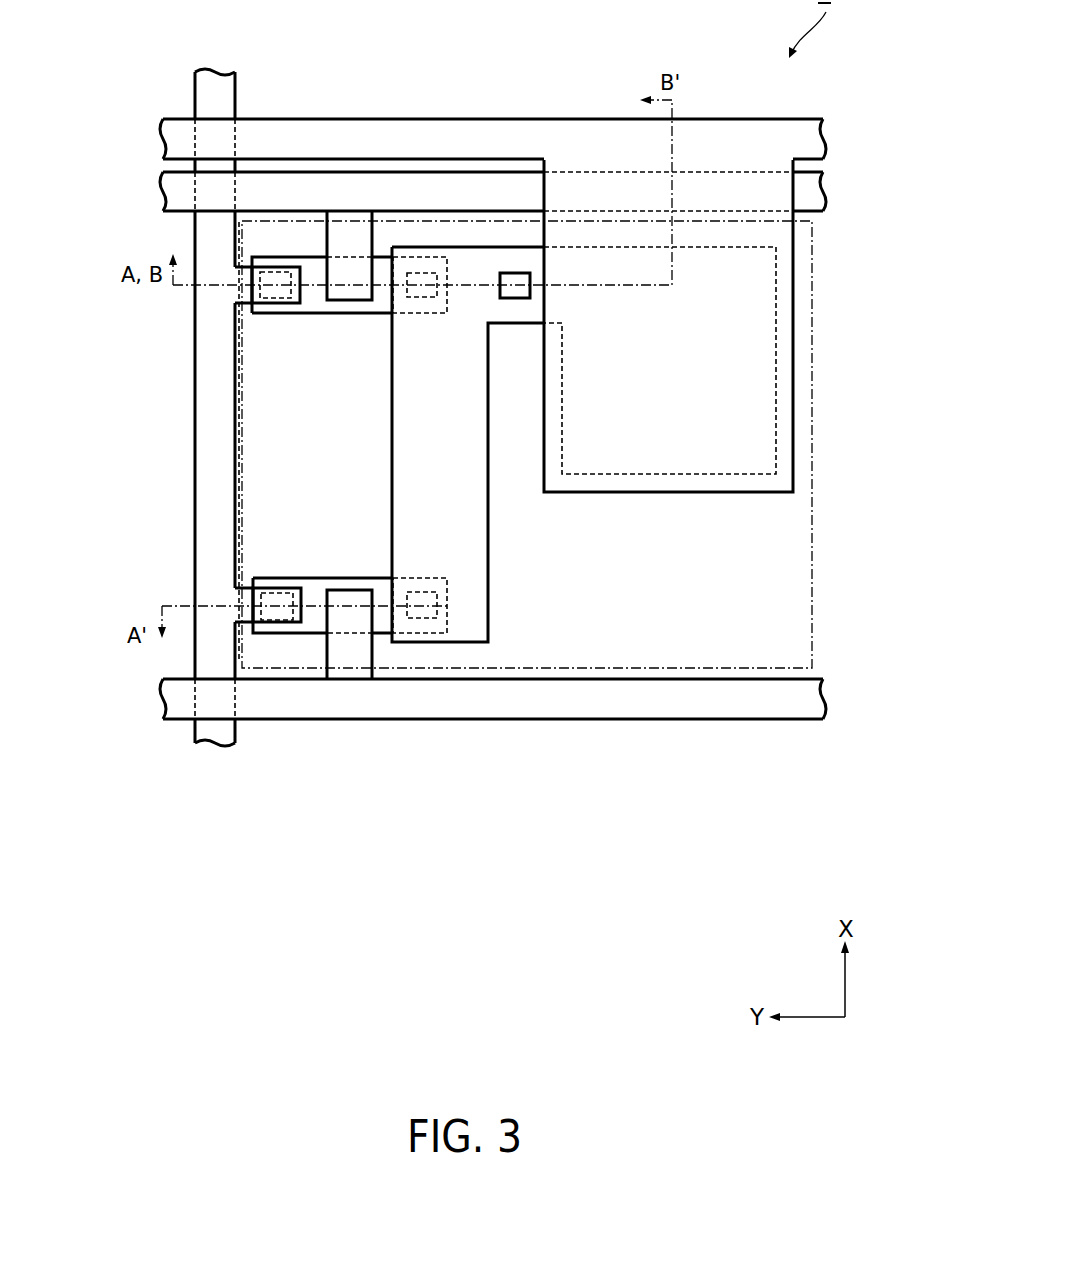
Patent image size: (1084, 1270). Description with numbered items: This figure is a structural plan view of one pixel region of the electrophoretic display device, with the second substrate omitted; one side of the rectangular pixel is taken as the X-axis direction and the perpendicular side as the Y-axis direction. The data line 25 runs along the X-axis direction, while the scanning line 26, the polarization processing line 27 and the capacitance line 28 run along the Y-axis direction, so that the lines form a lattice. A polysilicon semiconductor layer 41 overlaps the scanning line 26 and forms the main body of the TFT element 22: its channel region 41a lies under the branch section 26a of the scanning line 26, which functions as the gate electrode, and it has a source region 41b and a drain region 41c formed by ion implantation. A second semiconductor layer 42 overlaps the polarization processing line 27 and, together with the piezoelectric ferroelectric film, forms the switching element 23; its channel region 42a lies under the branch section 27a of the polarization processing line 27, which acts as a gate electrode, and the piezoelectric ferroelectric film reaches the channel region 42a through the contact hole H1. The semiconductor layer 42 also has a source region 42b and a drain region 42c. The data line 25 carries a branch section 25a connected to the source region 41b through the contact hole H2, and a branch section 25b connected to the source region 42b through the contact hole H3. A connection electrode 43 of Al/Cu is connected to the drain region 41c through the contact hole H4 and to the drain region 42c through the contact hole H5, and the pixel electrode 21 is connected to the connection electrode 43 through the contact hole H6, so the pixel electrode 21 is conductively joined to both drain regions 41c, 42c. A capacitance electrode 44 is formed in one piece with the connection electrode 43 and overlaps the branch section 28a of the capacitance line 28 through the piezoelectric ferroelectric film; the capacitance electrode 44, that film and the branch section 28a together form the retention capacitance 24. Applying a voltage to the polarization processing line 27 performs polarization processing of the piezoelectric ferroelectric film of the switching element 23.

The pixel electrode 21 is at (800, 283).
The TFT element 22 is at (216, 302).
The switching element 23 is at (219, 580).
The retention capacitance 24 is at (800, 435).
The data line 25 is at (208, 232).
The branch section 25a is at (257, 273).
The branch section 25b is at (258, 615).
The scanning line 26 is at (175, 193).
The branch section 26a is at (350, 278).
The polarization processing line 27 is at (178, 706).
The branch section 27a is at (366, 622).
The capacitance line 28 is at (175, 134).
The branch section 28a is at (783, 355).
The semiconductor layer 41 is at (127, 342).
The channel region 41a is at (343, 309).
The source region 41b is at (278, 309).
The drain region 41c is at (406, 298).
The semiconductor layer 42 is at (127, 466).
The channel region 42a is at (350, 582).
The source region 42b is at (283, 582).
The drain region 42c is at (408, 592).
The connection electrode 43 is at (435, 440).
The capacitance electrode 44 is at (652, 455).
The contact hole H1 is at (338, 613).
The contact hole H2 is at (266, 280).
The contact hole H3 is at (275, 620).
The contact hole H4 is at (416, 285).
The contact hole H5 is at (420, 618).
The contact hole H6 is at (508, 281).